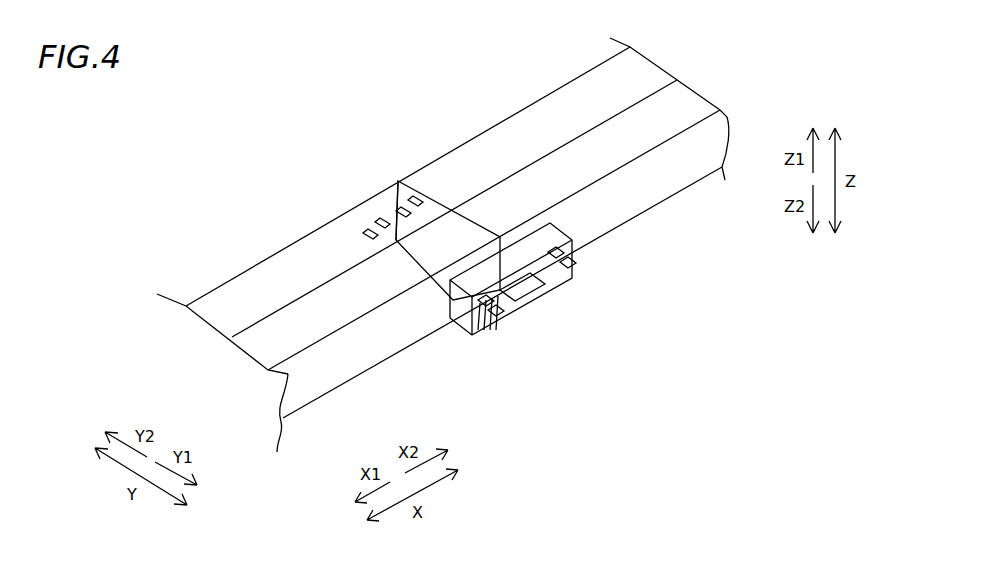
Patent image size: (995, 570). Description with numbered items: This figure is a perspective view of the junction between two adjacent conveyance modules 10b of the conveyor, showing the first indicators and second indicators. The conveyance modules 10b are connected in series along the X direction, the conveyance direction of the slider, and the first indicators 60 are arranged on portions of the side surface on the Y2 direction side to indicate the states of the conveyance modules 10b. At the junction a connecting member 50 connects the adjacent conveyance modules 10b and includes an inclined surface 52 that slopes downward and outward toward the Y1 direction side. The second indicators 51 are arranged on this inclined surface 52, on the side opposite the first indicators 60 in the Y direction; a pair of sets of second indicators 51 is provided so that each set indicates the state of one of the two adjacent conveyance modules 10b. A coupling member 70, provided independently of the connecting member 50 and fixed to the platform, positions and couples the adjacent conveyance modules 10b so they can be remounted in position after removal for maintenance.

The conveyance module 10b is at (548, 108).
The connecting member 50 is at (547, 298).
The second indicator 51 is at (565, 255).
The inclined surface 52 is at (530, 300).
The first indicator 60 is at (404, 209).
The coupling member 70 is at (423, 260).